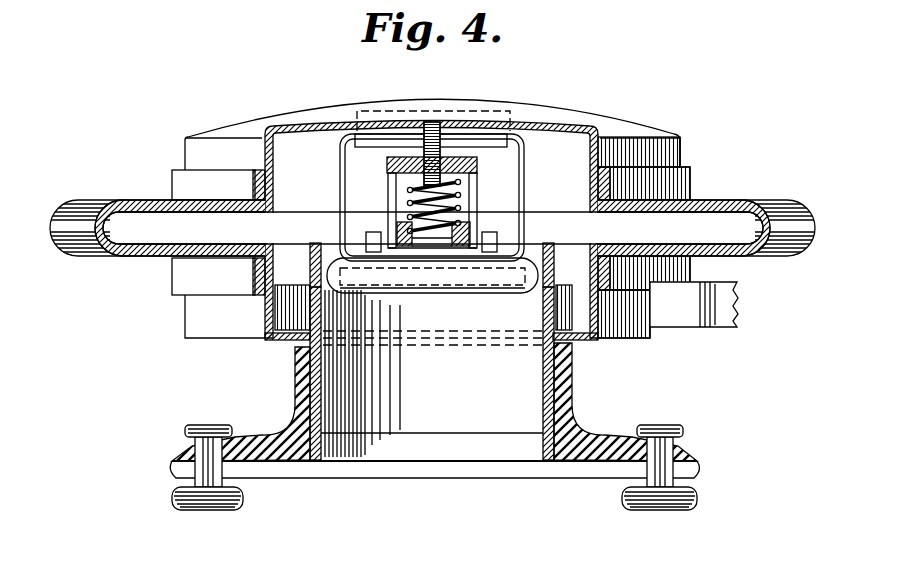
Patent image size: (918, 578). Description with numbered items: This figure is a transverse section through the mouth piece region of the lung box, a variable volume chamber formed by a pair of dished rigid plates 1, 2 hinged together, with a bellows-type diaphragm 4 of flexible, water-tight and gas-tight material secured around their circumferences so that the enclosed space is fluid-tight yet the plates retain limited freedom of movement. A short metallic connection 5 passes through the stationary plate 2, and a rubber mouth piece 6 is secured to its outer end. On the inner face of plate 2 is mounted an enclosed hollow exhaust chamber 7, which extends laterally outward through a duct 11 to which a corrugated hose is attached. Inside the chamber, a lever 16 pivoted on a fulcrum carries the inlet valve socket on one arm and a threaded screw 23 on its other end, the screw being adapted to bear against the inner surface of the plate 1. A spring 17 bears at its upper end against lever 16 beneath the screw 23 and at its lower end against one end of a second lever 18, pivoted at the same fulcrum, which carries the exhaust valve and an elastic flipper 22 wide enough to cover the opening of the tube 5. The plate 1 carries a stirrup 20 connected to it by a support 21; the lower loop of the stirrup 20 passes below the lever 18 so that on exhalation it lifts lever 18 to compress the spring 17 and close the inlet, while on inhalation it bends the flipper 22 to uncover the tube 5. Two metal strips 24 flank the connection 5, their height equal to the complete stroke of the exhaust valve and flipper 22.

The plate 1 is at (556, 110).
The plate 2 is at (634, 336).
The diaphragm 4 is at (123, 203).
The connection 5 is at (541, 379).
The mouth piece 6 is at (473, 481).
The exhaust chamber 7 is at (583, 326).
The duct 11 is at (711, 328).
The lever 16 is at (458, 157).
The spring 17 is at (456, 190).
The lever 18 is at (463, 226).
The stirrup 20 is at (342, 172).
The support 21 is at (398, 108).
The flipper 22 is at (464, 294).
The threaded screw 23 is at (432, 125).
The metal strips 24 is at (309, 247).